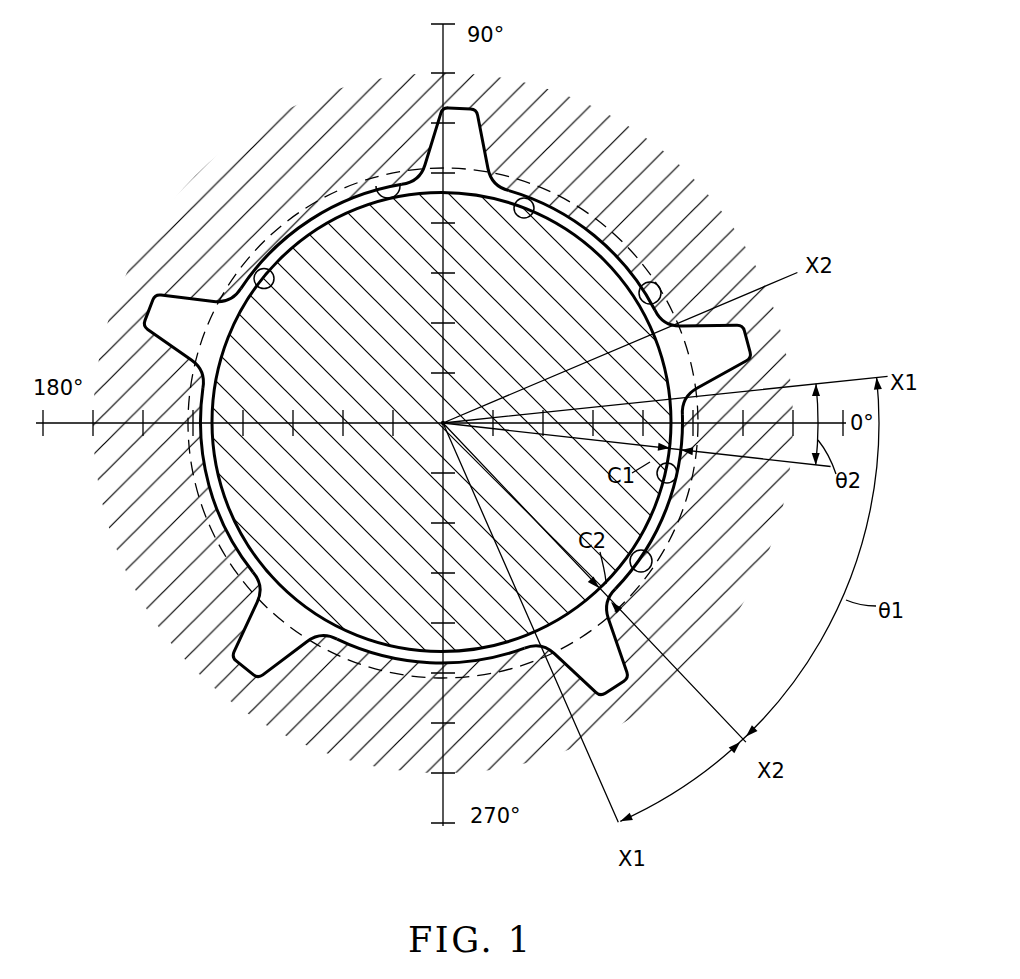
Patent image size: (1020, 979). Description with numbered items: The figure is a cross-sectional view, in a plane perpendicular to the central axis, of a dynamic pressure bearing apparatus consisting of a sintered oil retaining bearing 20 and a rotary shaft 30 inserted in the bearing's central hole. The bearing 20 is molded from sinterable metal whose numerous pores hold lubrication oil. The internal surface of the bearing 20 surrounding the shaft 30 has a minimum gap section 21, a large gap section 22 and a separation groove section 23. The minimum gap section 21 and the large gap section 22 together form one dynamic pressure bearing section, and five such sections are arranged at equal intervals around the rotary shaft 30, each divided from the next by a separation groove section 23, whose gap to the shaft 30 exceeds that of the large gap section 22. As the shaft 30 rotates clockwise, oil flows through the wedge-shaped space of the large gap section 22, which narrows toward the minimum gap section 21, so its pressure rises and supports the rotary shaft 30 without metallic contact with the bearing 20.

The sintered oil retaining bearing 20 is at (676, 204).
The minimum gap section 21 is at (535, 200).
The large gap section 22 is at (386, 185).
The separation groove section 23 is at (478, 118).
The rotary shaft 30 is at (372, 272).